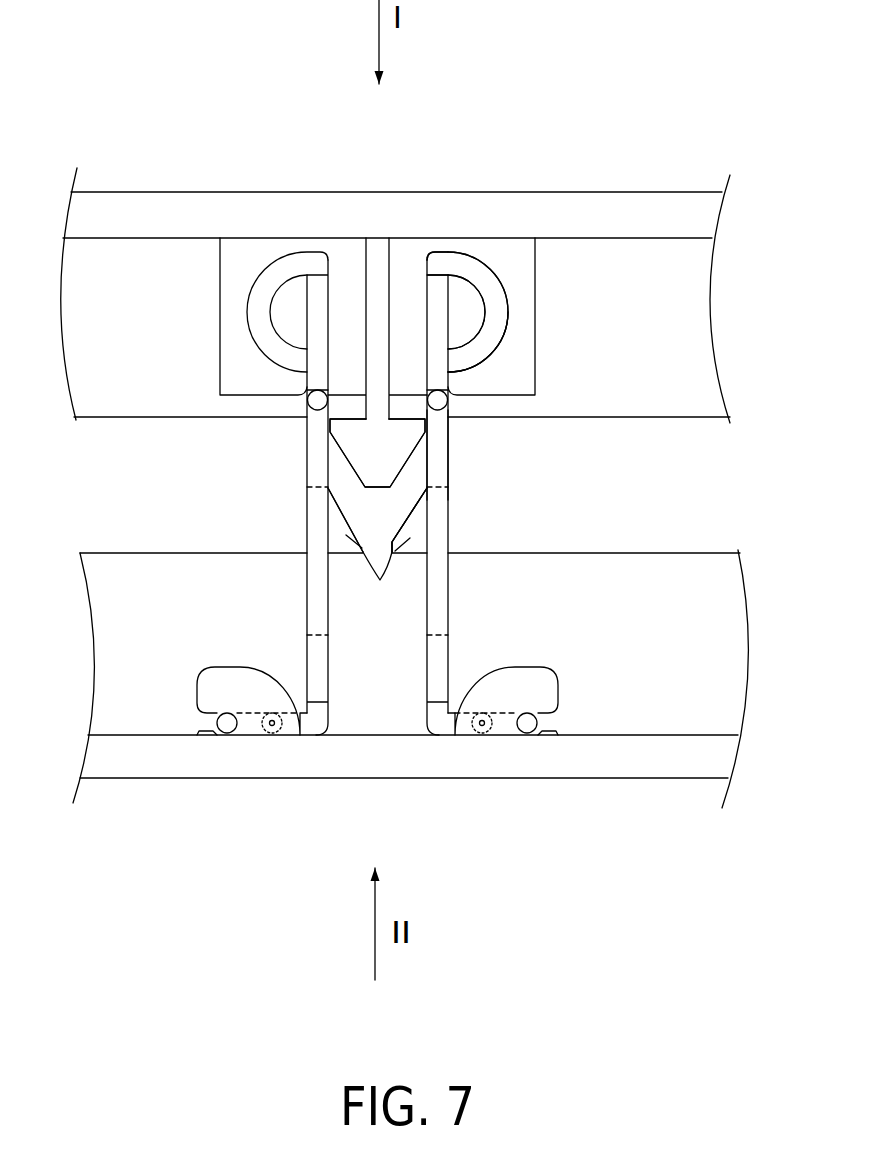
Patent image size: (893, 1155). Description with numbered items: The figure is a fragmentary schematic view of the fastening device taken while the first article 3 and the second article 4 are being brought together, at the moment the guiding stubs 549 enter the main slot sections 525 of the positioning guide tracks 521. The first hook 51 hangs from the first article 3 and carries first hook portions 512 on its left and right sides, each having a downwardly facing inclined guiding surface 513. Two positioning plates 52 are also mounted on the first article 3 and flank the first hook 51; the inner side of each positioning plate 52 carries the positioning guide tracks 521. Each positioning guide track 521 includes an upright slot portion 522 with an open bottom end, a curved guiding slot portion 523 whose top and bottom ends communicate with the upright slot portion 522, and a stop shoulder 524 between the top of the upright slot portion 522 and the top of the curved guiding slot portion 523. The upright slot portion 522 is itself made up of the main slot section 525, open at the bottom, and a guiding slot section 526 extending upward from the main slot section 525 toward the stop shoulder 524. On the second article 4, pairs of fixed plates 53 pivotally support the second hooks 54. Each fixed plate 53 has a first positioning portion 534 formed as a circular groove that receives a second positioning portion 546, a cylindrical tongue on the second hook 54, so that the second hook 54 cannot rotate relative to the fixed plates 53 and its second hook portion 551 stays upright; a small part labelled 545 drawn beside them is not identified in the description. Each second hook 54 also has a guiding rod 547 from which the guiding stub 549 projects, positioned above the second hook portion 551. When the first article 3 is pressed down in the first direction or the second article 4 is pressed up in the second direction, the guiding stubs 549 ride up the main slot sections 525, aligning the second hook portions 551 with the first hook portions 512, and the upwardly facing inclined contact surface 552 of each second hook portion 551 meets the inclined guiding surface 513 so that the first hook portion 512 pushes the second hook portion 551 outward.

The first article 3 is at (650, 193).
The second article 4 is at (677, 788).
The first hook 51 is at (343, 459).
The positioning plate 52 is at (547, 290).
The fixed plate 53 is at (188, 678).
The second hook 54 is at (305, 595).
The first hook portion 512 is at (395, 438).
The inclined guiding surface 513 is at (403, 463).
The positioning guide track 521 is at (279, 263).
The upright slot portion 522 is at (421, 278).
The curved guiding slot portion 523 is at (489, 331).
The stop shoulder 524 is at (437, 273).
The main slot section 525 is at (451, 380).
The guiding slot section 526 is at (451, 312).
The first positioning portion 534 is at (477, 732).
The pivot pin 545 is at (528, 723).
The second positioning portion 546 is at (486, 733).
The guiding rod 547 is at (453, 432).
The guiding stub 549 is at (437, 402).
The second hook portion 551 is at (378, 579).
The inclined contact surface 552 is at (412, 508).